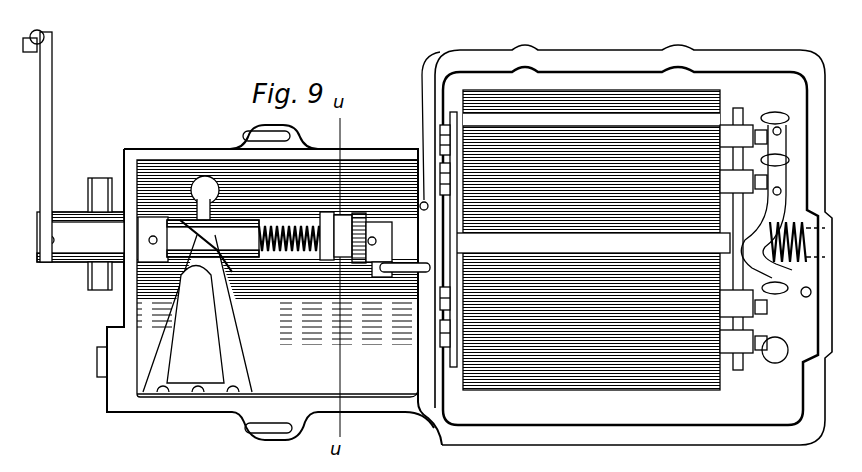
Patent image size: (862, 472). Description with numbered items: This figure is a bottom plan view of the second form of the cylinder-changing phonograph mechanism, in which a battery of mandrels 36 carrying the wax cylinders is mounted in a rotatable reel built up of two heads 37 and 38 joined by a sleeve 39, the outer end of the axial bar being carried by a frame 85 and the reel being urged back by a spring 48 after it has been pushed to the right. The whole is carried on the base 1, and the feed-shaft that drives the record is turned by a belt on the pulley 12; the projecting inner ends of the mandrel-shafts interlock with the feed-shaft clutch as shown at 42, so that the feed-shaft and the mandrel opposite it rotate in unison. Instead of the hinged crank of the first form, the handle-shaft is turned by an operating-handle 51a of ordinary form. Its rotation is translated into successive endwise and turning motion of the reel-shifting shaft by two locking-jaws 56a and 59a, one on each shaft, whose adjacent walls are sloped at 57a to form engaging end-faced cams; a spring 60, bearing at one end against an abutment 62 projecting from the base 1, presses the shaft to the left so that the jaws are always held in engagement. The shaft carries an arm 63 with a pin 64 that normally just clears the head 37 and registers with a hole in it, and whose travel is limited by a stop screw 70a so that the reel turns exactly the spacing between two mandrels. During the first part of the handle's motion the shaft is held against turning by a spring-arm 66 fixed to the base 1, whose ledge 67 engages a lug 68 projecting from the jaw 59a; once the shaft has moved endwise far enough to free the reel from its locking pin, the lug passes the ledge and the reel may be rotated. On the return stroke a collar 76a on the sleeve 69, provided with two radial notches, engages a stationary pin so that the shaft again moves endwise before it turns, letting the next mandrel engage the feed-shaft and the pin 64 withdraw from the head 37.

The base 1 is at (168, 407).
The pulley 12 is at (88, 281).
The mandrels 36 is at (573, 397).
The reel-head 37 is at (448, 372).
The reel-head 38 is at (786, 197).
The sleeve 39 is at (592, 243).
The clutch interlock 42 is at (438, 346).
The spring 48 is at (808, 262).
The operating-handle 51a is at (53, 153).
The locking-jaw 56a is at (142, 222).
The sloped cam-faces 57a is at (190, 236).
The locking-jaw 59a is at (246, 262).
The spring 60 is at (275, 238).
The abutment 62 is at (330, 261).
The arm 63 is at (384, 273).
The pin 64 is at (393, 270).
The spring-arm 66 is at (168, 362).
The ledge 67 is at (230, 238).
The lug 68 is at (212, 228).
The sleeve 69 is at (372, 218).
The screw 70a is at (420, 146).
The collar 76a is at (343, 264).
The frame 85 is at (698, 437).